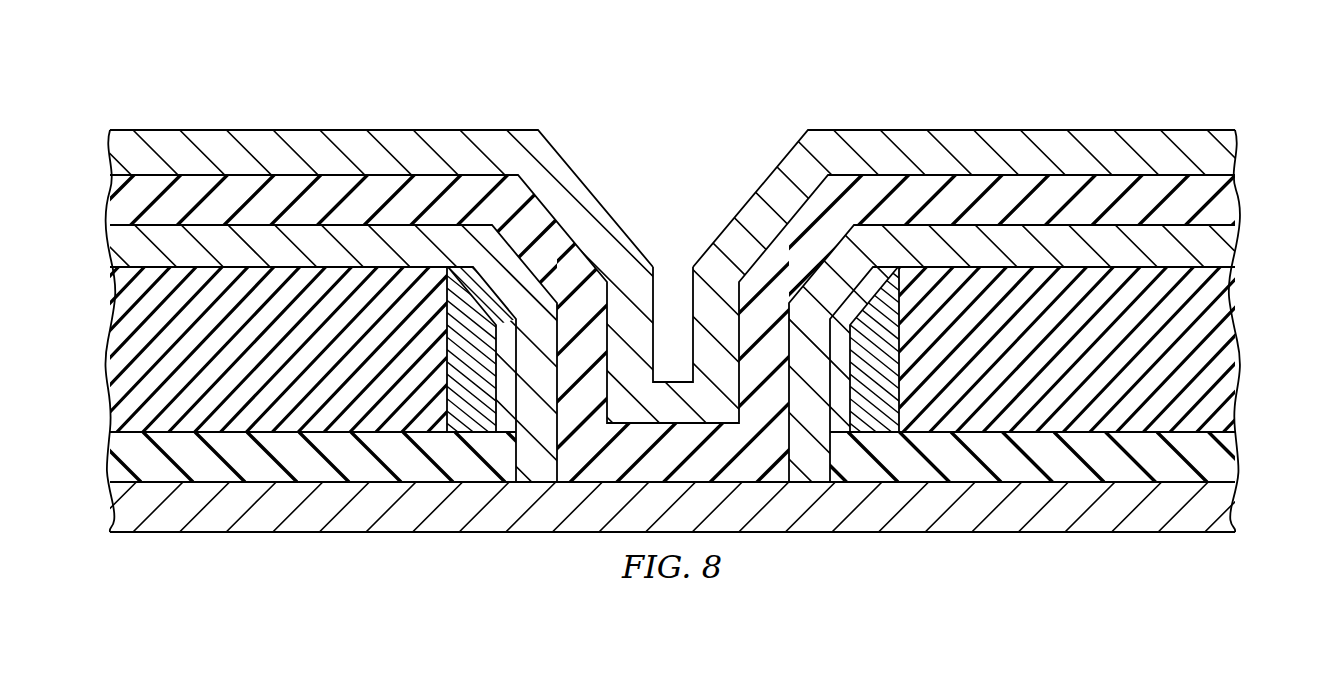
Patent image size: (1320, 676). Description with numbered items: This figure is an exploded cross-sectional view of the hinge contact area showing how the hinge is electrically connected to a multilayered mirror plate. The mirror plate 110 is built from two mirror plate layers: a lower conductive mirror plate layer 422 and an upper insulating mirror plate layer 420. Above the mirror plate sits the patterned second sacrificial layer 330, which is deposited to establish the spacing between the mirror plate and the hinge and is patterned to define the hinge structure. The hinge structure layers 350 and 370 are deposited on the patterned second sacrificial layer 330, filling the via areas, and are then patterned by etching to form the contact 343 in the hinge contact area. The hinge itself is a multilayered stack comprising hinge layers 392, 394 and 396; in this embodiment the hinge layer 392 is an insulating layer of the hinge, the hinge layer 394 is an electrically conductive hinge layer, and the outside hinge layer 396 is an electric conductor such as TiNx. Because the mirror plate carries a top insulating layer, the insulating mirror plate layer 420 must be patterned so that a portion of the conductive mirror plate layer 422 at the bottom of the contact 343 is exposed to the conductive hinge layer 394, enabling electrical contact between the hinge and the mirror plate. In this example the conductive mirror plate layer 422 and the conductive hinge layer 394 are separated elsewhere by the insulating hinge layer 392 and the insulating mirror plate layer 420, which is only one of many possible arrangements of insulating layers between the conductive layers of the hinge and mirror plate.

The mirror plate 110 is at (250, 534).
The second sacrificial layer 330 is at (112, 360).
The contact 343 is at (676, 122).
The hinge structure layer 350 is at (477, 433).
The hinge structure layer 370 is at (843, 433).
The hinge layer 392 is at (112, 238).
The intermediate hinge layer 394 is at (1240, 192).
The outside hinge layer 396 is at (112, 142).
The insulating mirror plate layer 420 is at (112, 462).
The conductive mirror plate layer 422 is at (112, 495).